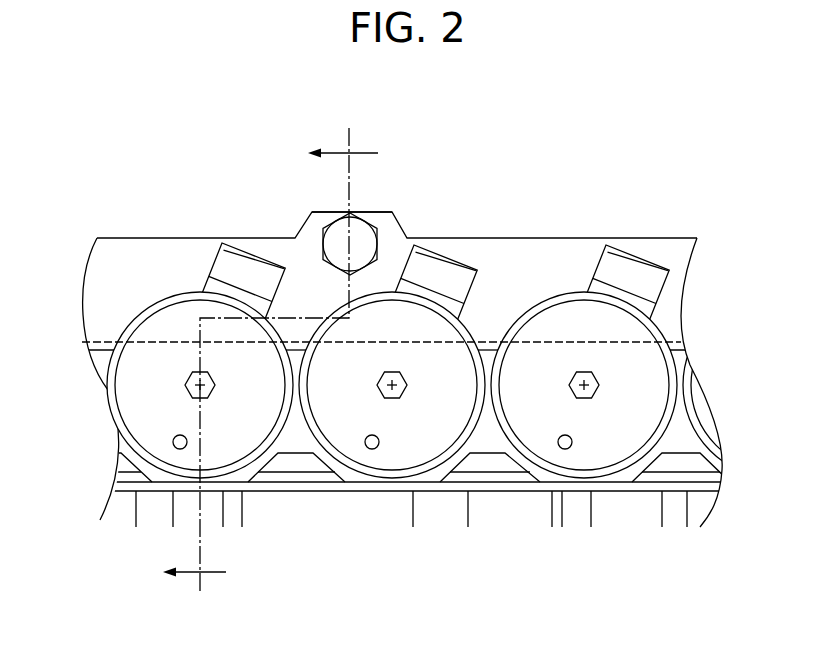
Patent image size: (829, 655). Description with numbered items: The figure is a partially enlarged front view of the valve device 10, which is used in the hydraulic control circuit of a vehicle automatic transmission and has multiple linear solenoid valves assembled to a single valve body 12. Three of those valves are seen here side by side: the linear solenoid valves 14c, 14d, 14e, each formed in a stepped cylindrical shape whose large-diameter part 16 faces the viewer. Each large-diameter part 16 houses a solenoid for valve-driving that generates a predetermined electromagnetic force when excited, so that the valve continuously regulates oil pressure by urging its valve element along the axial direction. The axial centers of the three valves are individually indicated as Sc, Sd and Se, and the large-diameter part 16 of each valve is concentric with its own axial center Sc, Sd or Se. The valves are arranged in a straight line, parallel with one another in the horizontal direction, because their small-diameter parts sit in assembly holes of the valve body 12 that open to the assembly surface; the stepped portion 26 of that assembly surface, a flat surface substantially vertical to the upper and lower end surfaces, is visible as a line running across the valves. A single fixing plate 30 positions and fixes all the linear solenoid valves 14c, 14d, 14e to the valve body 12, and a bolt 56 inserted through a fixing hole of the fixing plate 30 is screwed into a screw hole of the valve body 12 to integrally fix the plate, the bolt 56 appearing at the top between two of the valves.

The valve device 10 is at (429, 352).
The valve body 12 is at (742, 511).
The linear solenoid valve 14c is at (138, 285).
The linear solenoid valve 14d is at (387, 270).
The linear solenoid valve 14e is at (533, 276).
The large-diameter part 16 is at (133, 395).
The stepped portion 26 is at (105, 343).
The fixing plate 30 is at (188, 258).
The bolt 56 is at (340, 235).
The axial center Sc is at (207, 393).
The axial center Sd is at (401, 393).
The axial center Se is at (593, 393).